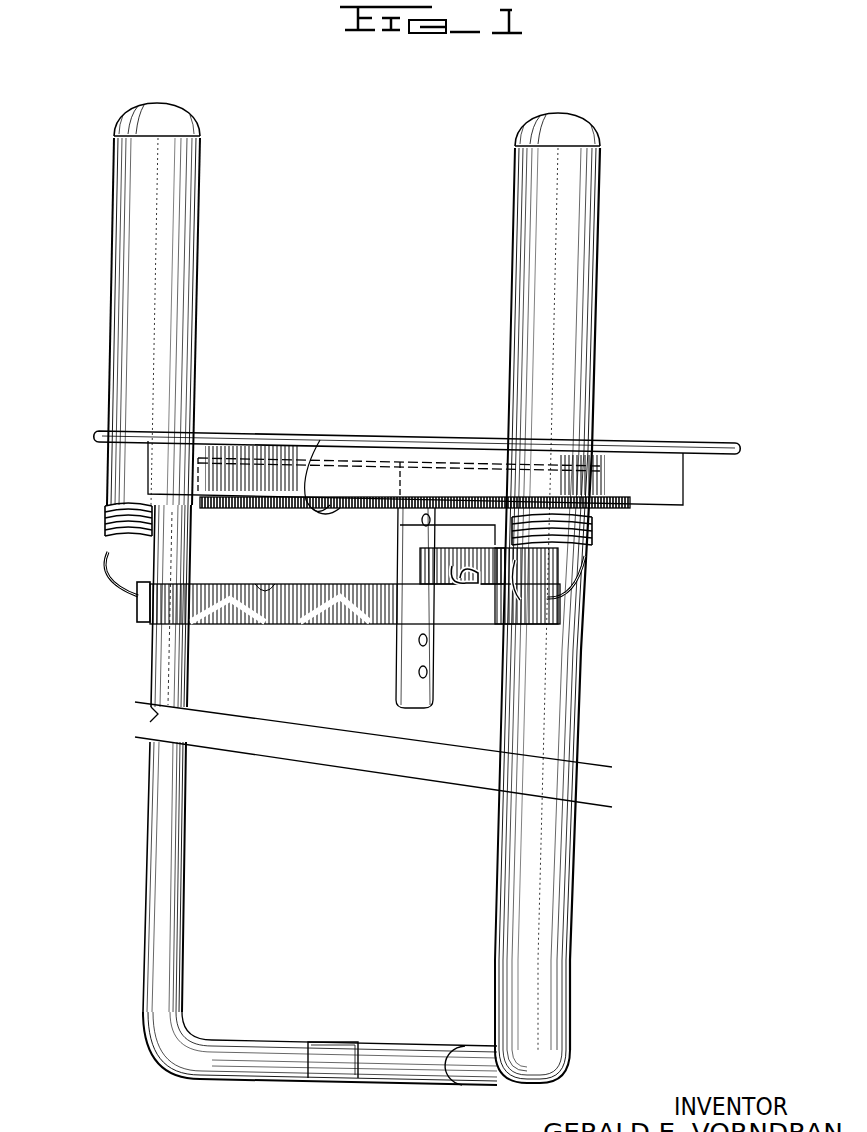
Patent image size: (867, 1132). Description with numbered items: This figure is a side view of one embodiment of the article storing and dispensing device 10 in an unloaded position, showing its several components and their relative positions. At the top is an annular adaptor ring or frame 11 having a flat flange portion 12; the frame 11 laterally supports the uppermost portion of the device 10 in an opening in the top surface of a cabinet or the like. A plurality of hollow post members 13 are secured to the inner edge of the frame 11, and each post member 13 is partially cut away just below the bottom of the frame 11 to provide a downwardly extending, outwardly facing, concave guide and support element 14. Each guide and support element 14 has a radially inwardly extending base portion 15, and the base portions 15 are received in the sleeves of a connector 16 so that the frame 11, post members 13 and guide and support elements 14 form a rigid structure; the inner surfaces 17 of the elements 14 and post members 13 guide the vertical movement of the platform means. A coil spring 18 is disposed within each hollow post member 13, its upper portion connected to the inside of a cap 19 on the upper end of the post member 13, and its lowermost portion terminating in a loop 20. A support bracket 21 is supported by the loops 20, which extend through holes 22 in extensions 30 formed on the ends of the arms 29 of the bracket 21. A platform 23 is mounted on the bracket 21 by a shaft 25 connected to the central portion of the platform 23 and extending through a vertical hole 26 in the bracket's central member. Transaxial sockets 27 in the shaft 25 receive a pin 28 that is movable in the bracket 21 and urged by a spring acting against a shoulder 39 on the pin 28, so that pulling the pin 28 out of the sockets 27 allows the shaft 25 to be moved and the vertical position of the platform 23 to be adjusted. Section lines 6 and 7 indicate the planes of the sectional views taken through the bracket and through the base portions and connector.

The article storing and dispensing device 10 is at (646, 323).
The annular adaptor ring or frame 11 is at (645, 470).
The flat flange portion 12 is at (716, 442).
The hollow post members 13 is at (195, 202).
The guide and support element 14 is at (153, 655).
The base portion 15 is at (256, 1046).
The connector 16 is at (405, 1046).
The inner surfaces 17 is at (187, 664).
The coil spring 18 is at (105, 517).
The cap 19 is at (172, 112).
The loop 20 is at (112, 588).
The support bracket 21 is at (350, 616).
The holes 22 is at (525, 612).
The platform 23 is at (304, 497).
The shaft 25 is at (431, 622).
The vertical hole 26 is at (438, 600).
The transaxial sockets 27 is at (430, 515).
The pin 28 is at (472, 607).
The arms 29 is at (262, 582).
The extension 30 is at (136, 609).
The shoulder 39 is at (522, 592).
The section line 6- 6 is at (90, 542).
The section line 7- 7 is at (110, 857).